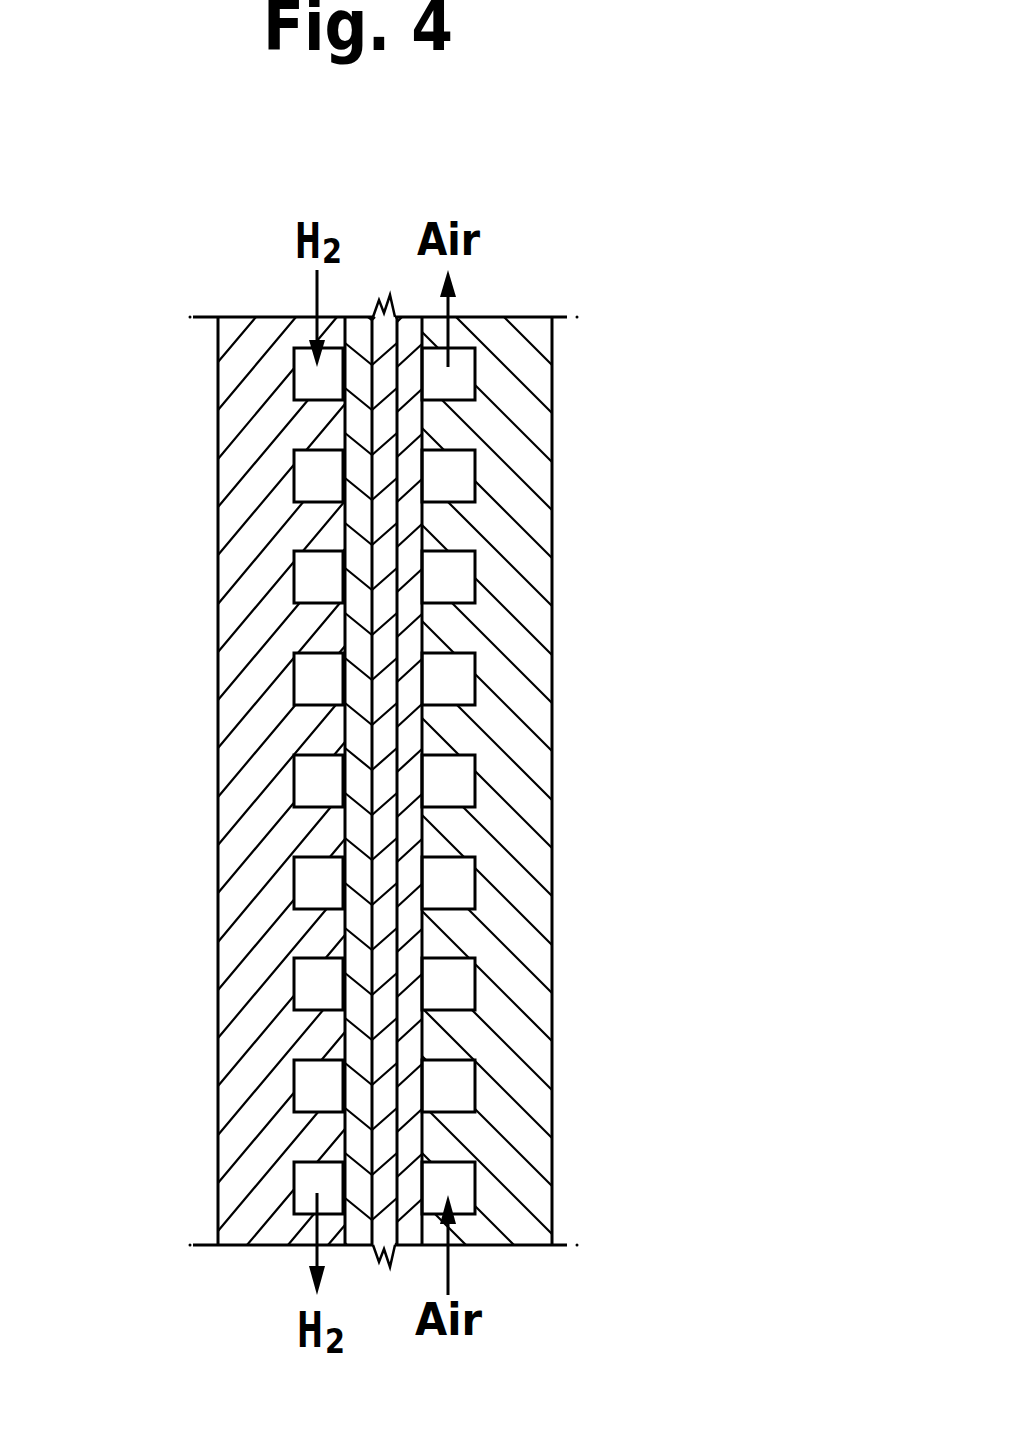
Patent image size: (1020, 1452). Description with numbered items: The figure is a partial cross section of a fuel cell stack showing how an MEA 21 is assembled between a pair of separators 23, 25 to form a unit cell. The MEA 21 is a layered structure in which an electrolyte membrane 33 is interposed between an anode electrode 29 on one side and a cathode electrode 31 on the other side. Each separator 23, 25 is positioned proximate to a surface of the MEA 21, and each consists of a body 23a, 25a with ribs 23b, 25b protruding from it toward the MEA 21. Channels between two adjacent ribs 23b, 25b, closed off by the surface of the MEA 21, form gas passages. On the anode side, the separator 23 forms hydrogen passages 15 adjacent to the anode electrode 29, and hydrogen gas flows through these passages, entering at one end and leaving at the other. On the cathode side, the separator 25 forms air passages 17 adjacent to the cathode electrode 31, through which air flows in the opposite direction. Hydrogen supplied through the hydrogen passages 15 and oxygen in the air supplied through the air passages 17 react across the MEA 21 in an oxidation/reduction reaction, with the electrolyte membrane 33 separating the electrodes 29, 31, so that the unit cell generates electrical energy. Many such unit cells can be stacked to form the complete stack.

The hydrogen passage 15 is at (317, 483).
The air passage 17 is at (460, 455).
The MEA 21 is at (231, 781).
The separator 23 is at (218, 781).
The body 23a is at (230, 668).
The rib 23b is at (337, 632).
The separator 25 is at (548, 781).
The body 25a is at (545, 528).
The rib 25b is at (432, 625).
The anode electrode 29 is at (357, 780).
The cathode electrode 31 is at (410, 875).
The electrolyte membrane 33 is at (383, 825).